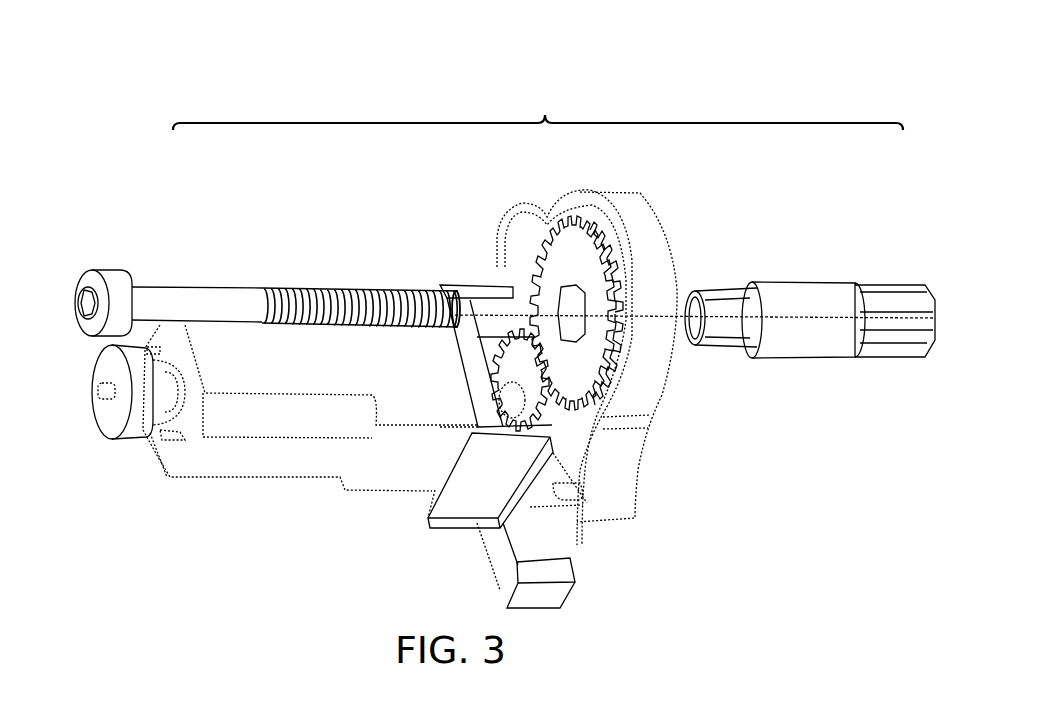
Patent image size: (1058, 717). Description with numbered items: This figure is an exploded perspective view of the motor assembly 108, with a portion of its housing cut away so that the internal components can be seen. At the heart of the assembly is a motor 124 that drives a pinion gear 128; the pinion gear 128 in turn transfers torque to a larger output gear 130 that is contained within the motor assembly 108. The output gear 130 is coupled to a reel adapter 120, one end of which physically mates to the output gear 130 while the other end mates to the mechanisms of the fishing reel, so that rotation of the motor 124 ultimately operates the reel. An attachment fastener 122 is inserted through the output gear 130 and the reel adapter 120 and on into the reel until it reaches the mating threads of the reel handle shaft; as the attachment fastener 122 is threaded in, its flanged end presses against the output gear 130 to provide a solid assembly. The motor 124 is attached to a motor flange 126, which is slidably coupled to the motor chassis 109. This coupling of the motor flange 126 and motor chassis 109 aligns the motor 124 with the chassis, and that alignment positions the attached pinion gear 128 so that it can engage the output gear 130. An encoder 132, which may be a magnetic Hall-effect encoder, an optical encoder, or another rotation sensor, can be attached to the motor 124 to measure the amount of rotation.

The motor assembly 108 is at (533, 86).
The motor chassis 109 is at (617, 510).
The reel adapter 120 is at (803, 347).
The attachment fastener 122 is at (170, 300).
The motor 124 is at (373, 465).
The motor flange 126 is at (467, 502).
The pinion gear 128 is at (528, 408).
The output gear 130 is at (587, 362).
The encoder 132 is at (112, 428).